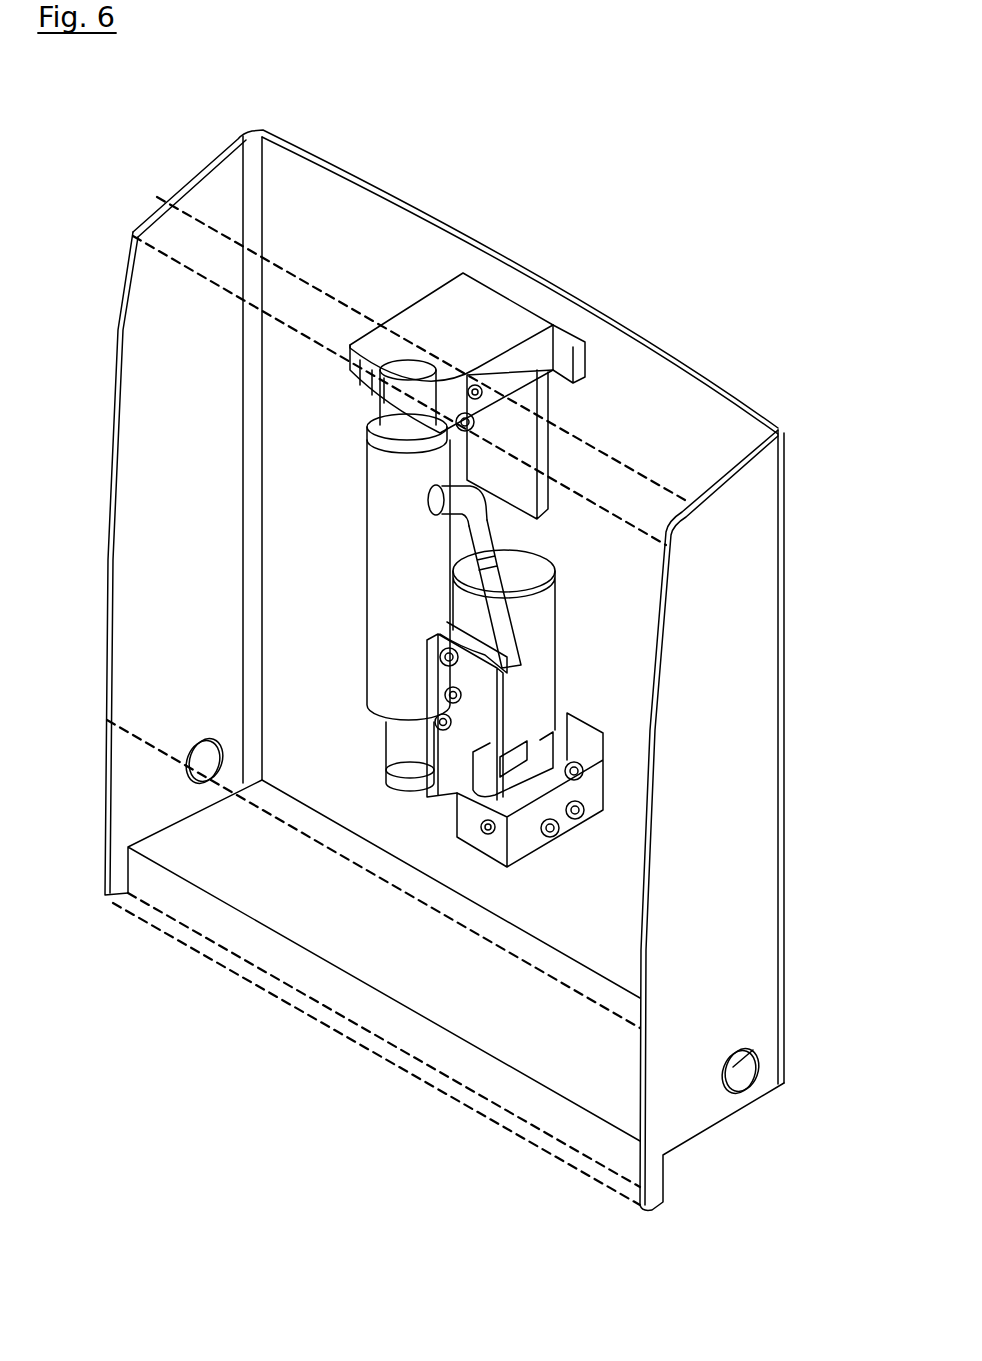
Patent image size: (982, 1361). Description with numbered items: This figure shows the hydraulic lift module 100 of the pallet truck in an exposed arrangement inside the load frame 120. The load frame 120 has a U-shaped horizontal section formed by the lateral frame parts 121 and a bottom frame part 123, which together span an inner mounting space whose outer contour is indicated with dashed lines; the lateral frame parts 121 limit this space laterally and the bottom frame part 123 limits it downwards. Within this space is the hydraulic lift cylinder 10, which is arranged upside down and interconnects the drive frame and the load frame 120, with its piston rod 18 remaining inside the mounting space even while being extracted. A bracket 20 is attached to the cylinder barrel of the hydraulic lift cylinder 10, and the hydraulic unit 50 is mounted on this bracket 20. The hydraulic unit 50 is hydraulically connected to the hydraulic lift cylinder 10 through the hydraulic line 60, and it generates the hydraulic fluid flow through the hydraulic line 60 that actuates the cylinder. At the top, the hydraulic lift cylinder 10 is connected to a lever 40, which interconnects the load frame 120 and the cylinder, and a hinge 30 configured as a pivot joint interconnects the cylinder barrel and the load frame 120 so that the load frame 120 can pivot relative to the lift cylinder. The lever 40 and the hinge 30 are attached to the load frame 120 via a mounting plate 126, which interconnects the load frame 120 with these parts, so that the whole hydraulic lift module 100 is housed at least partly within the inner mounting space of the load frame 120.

The hydraulic lift module 100 is at (323, 530).
The hydraulic lift cylinder 10 is at (400, 648).
The piston rod 18 is at (407, 750).
The bracket 20 is at (470, 720).
The hinge 30 is at (444, 336).
The lever 40 is at (503, 320).
The hydraulic unit 50 is at (537, 643).
The hydraulic line 60 is at (493, 610).
The load frame 120 is at (653, 397).
The lateral frame parts 121 is at (148, 527).
The bottom frame part 123 is at (418, 968).
The mounting plate 126 is at (500, 474).